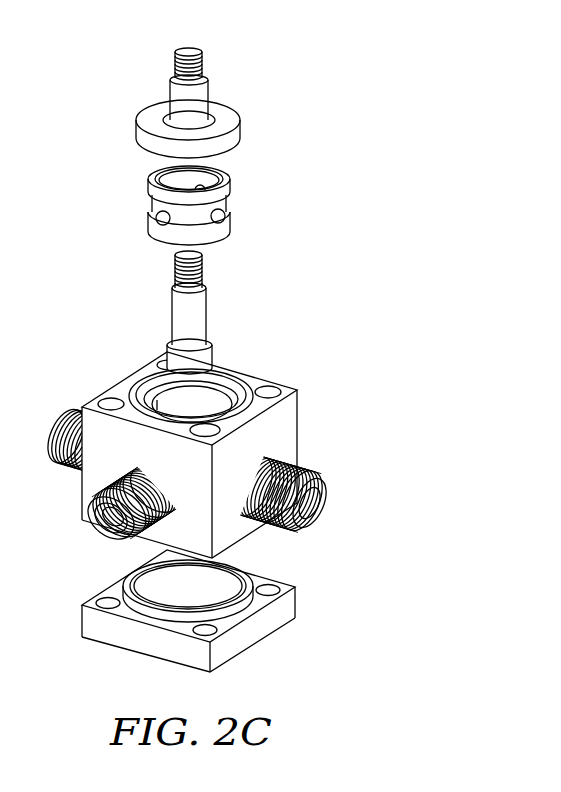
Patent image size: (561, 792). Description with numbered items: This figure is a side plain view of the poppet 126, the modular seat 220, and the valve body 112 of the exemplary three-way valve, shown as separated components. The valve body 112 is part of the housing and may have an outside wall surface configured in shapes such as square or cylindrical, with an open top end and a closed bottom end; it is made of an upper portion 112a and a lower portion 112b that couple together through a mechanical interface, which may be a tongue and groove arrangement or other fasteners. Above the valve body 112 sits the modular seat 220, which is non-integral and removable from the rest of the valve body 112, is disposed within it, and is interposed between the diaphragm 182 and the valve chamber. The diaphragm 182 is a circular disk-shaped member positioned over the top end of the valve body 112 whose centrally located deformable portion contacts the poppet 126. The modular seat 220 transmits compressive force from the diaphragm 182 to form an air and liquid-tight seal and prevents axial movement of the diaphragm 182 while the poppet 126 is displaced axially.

The diaphragm 182 is at (240, 128).
The modular seat 220 is at (228, 223).
The poppet 126 is at (207, 322).
The upper portion 112a is at (297, 408).
The valve body 112 is at (215, 455).
The lower portion 112b is at (297, 600).